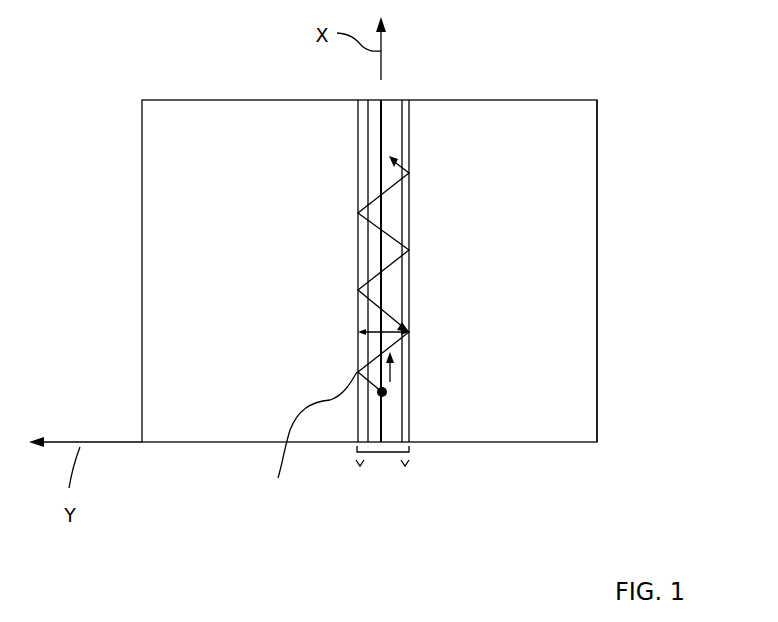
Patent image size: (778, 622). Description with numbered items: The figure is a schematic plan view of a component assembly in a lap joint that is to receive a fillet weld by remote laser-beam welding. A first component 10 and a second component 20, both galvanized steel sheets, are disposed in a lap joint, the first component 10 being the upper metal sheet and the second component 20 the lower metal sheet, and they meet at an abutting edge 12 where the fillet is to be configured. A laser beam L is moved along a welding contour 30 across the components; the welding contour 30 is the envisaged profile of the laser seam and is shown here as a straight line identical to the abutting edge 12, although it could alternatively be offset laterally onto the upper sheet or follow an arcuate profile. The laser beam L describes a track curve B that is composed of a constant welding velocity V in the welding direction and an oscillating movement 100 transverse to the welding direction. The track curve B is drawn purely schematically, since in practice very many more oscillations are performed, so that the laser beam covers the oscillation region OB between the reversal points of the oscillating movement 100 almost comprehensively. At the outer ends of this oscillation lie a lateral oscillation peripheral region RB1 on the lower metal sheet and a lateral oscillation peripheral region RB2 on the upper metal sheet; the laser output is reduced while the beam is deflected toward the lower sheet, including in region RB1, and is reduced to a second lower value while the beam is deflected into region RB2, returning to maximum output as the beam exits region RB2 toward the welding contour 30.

The first component 10 is at (211, 430).
The second component 20 is at (573, 430).
The welding contour 30 is at (410, 204).
The oscillating movement 100 is at (307, 441).
The abutting edge 12 is at (386, 394).
The track curve B is at (403, 170).
The laser beam L is at (383, 425).
The welding velocity V is at (395, 369).
The oscillation region OB is at (382, 456).
The lateral oscillation peripheral region RB1 is at (405, 466).
The lateral oscillation peripheral region RB2 is at (361, 466).